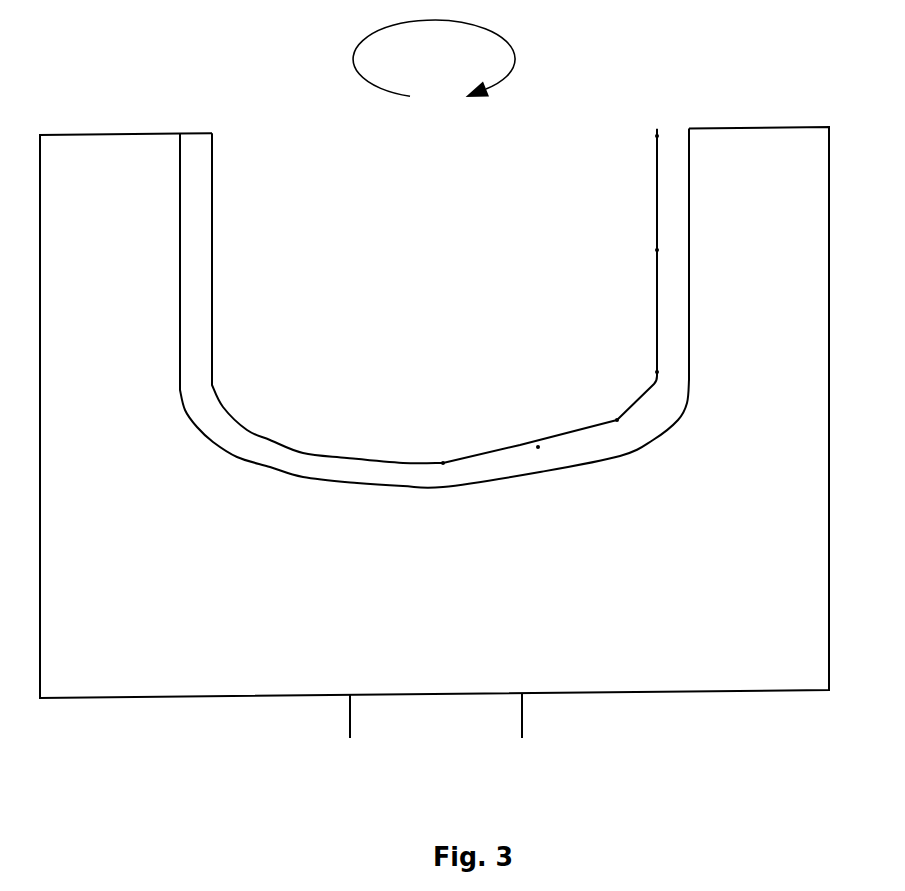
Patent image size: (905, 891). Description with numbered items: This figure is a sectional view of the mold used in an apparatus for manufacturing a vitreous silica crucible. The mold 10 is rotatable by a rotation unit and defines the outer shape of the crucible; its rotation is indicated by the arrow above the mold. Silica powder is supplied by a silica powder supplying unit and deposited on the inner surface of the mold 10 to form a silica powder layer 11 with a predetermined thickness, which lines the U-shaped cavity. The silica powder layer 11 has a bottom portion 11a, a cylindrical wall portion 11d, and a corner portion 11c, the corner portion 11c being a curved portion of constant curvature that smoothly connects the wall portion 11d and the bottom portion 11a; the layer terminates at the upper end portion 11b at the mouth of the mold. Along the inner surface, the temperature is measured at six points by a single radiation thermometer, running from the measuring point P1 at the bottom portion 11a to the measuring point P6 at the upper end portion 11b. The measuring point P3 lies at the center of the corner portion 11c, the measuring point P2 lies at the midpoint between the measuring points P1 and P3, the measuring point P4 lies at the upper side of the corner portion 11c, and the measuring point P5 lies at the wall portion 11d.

The mold 10 is at (183, 698).
The silica powder layer 11 is at (540, 347).
The bottom portion 11a is at (480, 457).
The upper end portion 11b is at (657, 128).
The corner portion 11c is at (640, 397).
The wall portion 11d is at (657, 224).
The measuring point P1 is at (443, 460).
The measuring point P2 is at (538, 446).
The measuring point P3 is at (617, 419).
The measuring point P4 is at (656, 372).
The measuring point P5 is at (656, 250).
The measuring point P6 is at (656, 136).